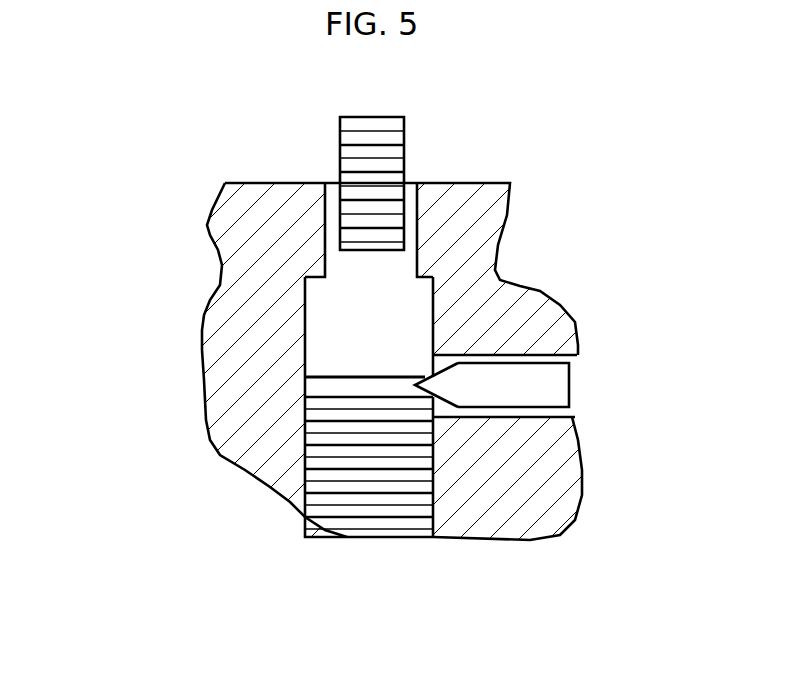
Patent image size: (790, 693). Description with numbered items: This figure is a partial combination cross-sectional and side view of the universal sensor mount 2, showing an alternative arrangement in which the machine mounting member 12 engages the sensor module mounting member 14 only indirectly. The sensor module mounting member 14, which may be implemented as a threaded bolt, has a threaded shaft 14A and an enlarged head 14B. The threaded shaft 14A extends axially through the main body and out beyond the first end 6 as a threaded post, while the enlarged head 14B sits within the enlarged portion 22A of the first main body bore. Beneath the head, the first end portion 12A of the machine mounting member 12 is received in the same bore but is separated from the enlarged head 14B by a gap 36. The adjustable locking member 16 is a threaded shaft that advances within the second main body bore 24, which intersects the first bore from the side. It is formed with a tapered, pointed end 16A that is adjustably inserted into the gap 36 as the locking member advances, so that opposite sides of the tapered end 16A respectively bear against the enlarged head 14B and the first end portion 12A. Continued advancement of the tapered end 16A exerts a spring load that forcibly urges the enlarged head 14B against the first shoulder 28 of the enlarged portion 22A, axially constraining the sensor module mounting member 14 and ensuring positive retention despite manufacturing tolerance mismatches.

The universal sensor mount 2 is at (178, 153).
The first end 6 is at (277, 183).
The machine mounting member 12 is at (356, 537).
The first end portion 12A is at (345, 452).
The sensor module mounting member 14 is at (405, 142).
The threaded shaft 14A is at (362, 215).
The enlarged head 14B is at (335, 318).
The adjustable locking member 16 is at (547, 392).
The tapered end 16A is at (445, 380).
The enlarged portion 22A is at (433, 525).
The second main body bore 24 is at (572, 417).
The first shoulder 28 is at (423, 272).
The gap 36 is at (322, 386).